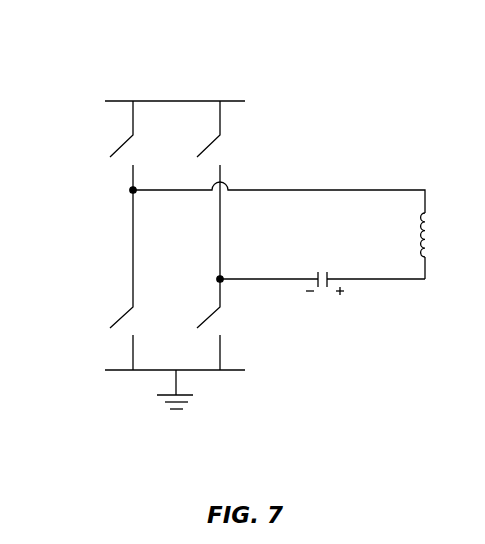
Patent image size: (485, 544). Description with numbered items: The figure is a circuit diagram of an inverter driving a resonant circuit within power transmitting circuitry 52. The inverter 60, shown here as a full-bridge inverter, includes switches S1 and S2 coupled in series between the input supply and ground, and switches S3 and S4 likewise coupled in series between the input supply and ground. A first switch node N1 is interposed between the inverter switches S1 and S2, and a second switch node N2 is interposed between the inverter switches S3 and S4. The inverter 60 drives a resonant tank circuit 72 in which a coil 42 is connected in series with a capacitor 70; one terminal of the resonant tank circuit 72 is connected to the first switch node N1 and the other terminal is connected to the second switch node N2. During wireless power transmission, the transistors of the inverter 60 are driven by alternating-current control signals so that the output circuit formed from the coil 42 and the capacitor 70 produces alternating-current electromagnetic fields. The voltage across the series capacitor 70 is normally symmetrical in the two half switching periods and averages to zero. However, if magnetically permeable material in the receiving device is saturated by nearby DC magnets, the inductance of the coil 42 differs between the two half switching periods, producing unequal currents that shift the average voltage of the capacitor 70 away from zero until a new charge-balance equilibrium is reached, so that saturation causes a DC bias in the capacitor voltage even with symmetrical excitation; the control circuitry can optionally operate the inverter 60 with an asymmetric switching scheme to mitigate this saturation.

The power transmitting circuitry 52 is at (407, 65).
The inverter 60 is at (105, 427).
The resonant tank circuit 72 is at (278, 338).
The capacitor 70 is at (313, 271).
The coil 42 is at (397, 235).
The switch S1 is at (106, 141).
The switch S2 is at (110, 310).
The switch S3 is at (228, 152).
The switch S4 is at (223, 322).
The first switch node N1 is at (129, 190).
The second switch node N2 is at (215, 279).